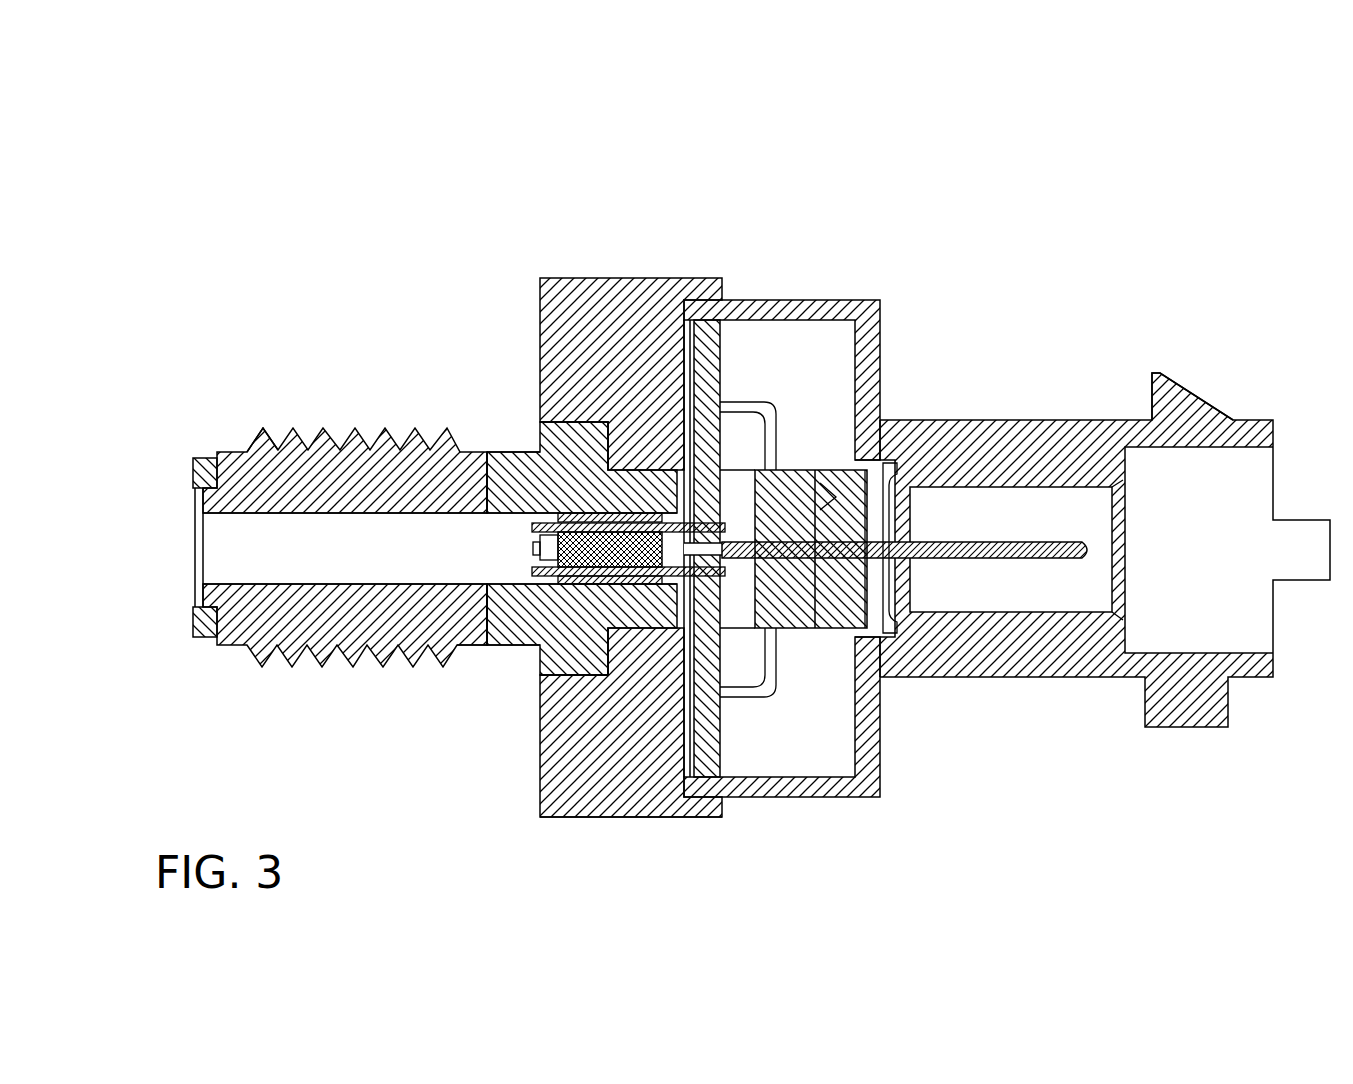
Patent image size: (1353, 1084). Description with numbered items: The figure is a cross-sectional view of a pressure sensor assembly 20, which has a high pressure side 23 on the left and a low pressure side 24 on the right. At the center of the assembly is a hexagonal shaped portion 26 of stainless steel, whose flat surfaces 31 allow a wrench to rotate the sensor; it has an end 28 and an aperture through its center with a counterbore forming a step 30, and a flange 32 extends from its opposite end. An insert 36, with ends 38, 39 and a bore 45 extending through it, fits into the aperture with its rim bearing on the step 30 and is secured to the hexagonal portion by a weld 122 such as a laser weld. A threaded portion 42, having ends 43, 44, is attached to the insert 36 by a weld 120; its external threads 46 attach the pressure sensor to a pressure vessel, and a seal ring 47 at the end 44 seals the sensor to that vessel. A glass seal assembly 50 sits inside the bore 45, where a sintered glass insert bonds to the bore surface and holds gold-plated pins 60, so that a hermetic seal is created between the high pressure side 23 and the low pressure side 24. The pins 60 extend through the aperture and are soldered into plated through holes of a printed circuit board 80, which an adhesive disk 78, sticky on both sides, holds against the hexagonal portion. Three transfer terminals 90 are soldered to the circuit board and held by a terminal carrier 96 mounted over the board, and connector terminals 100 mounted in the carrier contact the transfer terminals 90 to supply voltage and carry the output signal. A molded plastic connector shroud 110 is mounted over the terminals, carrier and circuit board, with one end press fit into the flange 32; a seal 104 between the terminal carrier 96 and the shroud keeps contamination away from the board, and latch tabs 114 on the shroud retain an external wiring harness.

The pressure sensor assembly 20 is at (365, 203).
The high pressure side 23 is at (142, 311).
The low pressure side 24 is at (1077, 209).
The hexagonal shaped portion 26 is at (655, 273).
The end 28 is at (537, 793).
The step 30 is at (613, 422).
The flat surfaces 31 is at (593, 818).
The flange 32 is at (717, 808).
The insert 36 is at (505, 453).
The end 38 is at (640, 632).
The end 39 is at (507, 645).
The threaded portion 42 is at (323, 429).
The end 43 is at (477, 452).
The end 44 is at (240, 443).
The bore 45 is at (334, 557).
The external threads 46 is at (249, 648).
The seal ring 47 is at (193, 470).
The glass seal assembly 50 is at (588, 594).
The pins 60 is at (595, 512).
The adhesive disk 78 is at (688, 700).
The printed circuit board 80 is at (723, 362).
The transfer terminals 90 is at (765, 700).
The terminal carrier 96 is at (787, 628).
The connector terminals 100 is at (967, 542).
The seal 104 is at (840, 470).
The connector shroud 110 is at (1035, 680).
The latch tabs 114 is at (1158, 372).
The weld 120 is at (487, 655).
The weld 122 is at (540, 672).